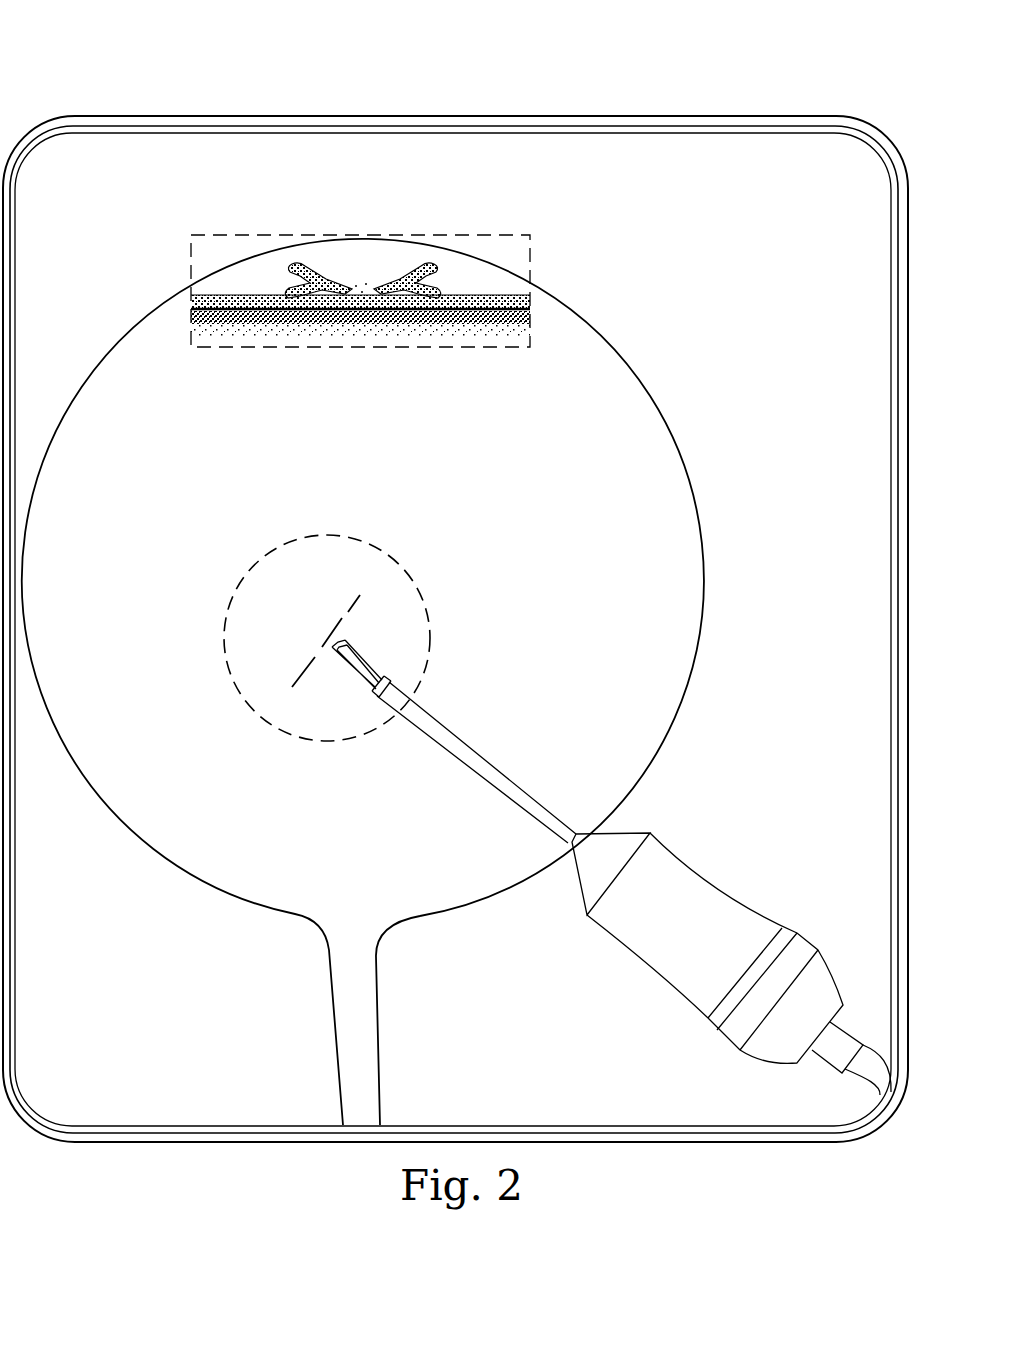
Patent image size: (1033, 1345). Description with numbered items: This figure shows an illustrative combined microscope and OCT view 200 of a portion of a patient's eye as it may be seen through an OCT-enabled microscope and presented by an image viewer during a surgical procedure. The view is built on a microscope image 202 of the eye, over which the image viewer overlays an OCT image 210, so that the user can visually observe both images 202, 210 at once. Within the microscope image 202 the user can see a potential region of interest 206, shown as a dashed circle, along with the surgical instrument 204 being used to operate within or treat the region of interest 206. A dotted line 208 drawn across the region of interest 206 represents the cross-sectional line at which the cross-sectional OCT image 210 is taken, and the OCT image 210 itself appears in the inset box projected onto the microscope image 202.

The combined microscope and OCT view 200 is at (126, 66).
The microscope image 202 is at (701, 143).
The surgical instrument 204 is at (712, 888).
The region of interest 206 is at (224, 640).
The dotted line 208 is at (345, 617).
The OCT image 210 is at (360, 233).